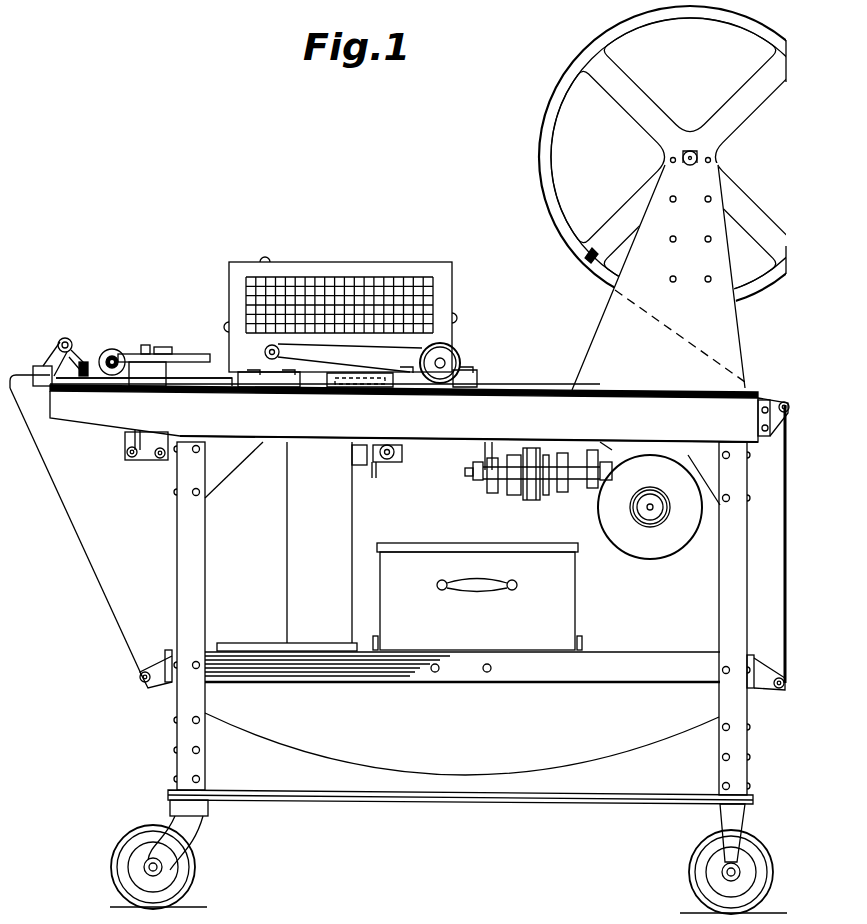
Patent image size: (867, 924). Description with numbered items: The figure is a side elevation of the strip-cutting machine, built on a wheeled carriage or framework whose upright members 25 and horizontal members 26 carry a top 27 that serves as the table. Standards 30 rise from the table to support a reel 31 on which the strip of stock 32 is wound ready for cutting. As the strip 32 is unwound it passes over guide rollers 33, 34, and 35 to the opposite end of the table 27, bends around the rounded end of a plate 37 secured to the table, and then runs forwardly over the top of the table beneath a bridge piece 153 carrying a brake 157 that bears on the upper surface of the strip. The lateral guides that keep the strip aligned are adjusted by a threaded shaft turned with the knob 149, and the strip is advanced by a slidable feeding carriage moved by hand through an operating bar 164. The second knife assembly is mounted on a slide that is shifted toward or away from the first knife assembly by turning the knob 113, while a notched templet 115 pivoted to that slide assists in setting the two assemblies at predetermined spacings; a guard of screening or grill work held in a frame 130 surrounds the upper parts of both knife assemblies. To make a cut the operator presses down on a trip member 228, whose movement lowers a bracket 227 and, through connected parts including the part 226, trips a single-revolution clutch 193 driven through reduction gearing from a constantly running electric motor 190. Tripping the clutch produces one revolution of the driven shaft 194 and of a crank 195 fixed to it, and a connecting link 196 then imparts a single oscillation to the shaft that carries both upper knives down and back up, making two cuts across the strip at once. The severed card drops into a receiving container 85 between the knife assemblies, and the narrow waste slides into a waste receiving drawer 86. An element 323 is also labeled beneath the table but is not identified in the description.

The upright members 25 is at (197, 592).
The horizontal members 26 is at (562, 675).
The top 27 is at (496, 470).
The standards 30 is at (603, 331).
The reel 31 is at (556, 140).
The strip of stock 32 is at (96, 573).
The guide roller 33 is at (773, 423).
The guide roller 34 is at (776, 690).
The guide roller 35 is at (147, 689).
The plate 37 is at (27, 380).
The receiving container 85 is at (352, 533).
The waste receiving drawer 86 is at (435, 565).
The knob 113 is at (453, 350).
The notched templet 115 is at (309, 362).
The frame 130 is at (412, 270).
The knob 149 is at (98, 396).
The bridge piece 153 is at (42, 366).
The brake 157 is at (83, 362).
The operating bar 164 is at (129, 350).
The electric motor 190 is at (642, 545).
The single-revolution clutch 193 is at (592, 460).
The driven shaft 194 is at (549, 466).
The crank 195 is at (498, 495).
The connecting link 196 is at (483, 457).
The connected part 226 is at (143, 458).
The bracket 227 is at (128, 434).
The trip member 228 is at (164, 392).
The bracket 323 is at (392, 466).